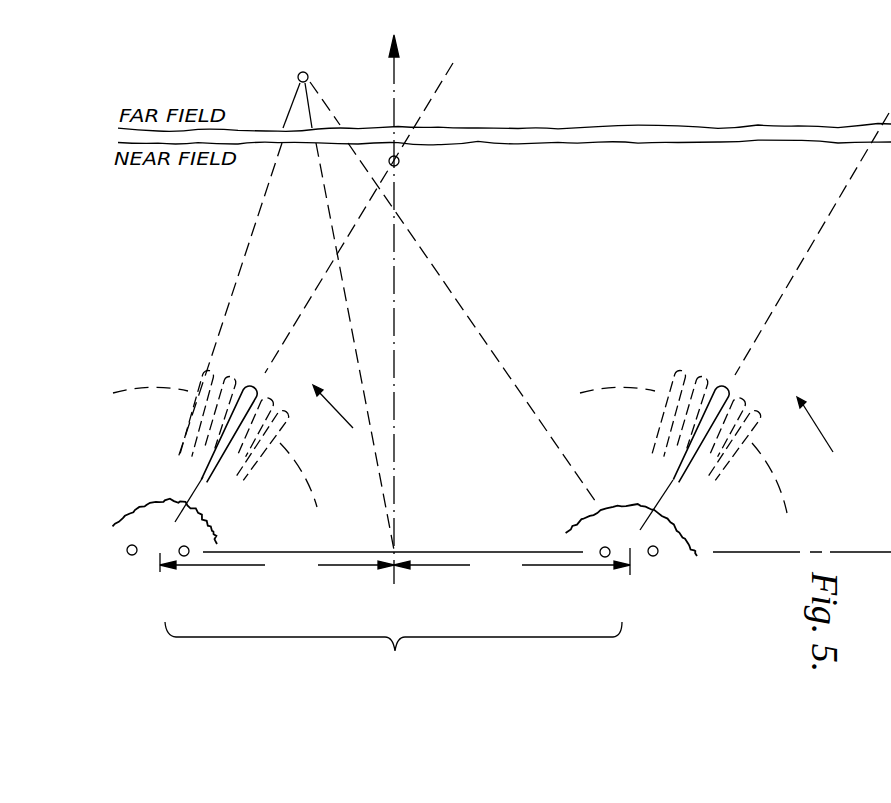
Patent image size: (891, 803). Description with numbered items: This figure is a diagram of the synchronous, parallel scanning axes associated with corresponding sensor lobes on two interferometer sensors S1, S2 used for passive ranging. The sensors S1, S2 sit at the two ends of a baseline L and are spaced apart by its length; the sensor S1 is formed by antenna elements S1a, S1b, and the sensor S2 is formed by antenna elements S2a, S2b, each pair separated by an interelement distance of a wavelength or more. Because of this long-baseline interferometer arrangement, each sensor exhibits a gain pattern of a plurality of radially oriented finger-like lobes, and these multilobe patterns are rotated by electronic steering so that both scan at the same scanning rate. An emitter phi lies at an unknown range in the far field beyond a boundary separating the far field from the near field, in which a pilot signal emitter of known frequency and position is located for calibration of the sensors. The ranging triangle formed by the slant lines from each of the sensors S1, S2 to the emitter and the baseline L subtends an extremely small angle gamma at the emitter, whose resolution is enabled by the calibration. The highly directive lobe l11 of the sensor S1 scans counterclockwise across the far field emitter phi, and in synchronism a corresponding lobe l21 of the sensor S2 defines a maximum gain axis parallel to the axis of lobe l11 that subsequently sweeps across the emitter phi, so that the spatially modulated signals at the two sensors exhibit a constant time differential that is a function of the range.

The interferometer sensor S1 is at (161, 577).
The antenna element S1a is at (131, 556).
The antenna element S1b is at (187, 556).
The interferometer sensor S2 is at (629, 575).
The antenna element S2a is at (603, 557).
The antenna element S2b is at (655, 556).
The sensor lobe l11 is at (257, 383).
The sensor lobe l21 is at (727, 387).
The emitter phi is at (298, 76).
The subtended angle gamma is at (323, 112).
The baseline L is at (396, 654).